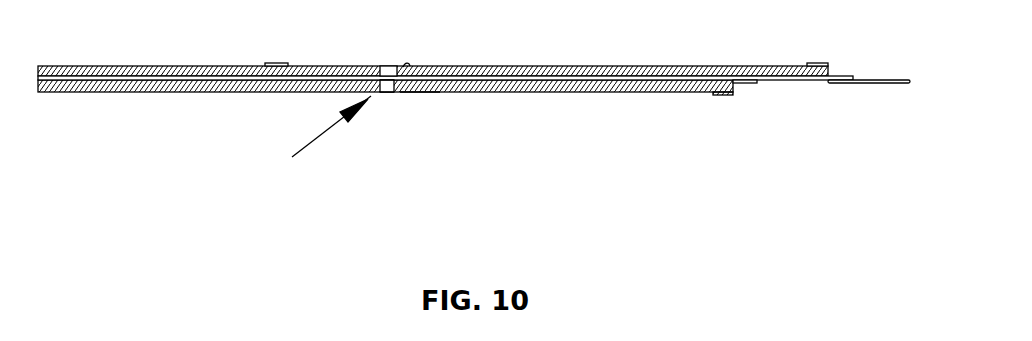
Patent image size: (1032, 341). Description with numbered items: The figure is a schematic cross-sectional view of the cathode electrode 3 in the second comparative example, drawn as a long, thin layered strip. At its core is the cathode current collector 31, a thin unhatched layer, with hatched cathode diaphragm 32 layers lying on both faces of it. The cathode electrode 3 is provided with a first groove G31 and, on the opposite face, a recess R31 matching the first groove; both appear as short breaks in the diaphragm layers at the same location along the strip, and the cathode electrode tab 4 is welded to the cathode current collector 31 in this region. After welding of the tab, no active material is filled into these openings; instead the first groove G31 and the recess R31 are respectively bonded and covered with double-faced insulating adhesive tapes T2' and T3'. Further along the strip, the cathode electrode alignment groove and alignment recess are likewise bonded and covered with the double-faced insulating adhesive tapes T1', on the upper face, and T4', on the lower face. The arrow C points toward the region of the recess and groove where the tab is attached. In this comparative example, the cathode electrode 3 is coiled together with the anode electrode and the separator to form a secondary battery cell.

The cathode electrode 3 is at (135, 33).
The cathode current collector 31 is at (80, 77).
The cathode diaphragm 32 is at (55, 84).
The insulating adhesive tape of G32 T1' is at (293, 51).
The insulating adhesive tape of G31 T2' is at (607, 51).
The insulating adhesive tape of R31 T3' is at (381, 111).
The insulating adhesive tape of R32 T4' is at (442, 108).
The recess matching with the first groove R31 is at (383, 67).
The first groove G31 is at (394, 93).
The cathode electrode tab 4 is at (386, 93).
The cutting direction C is at (326, 137).